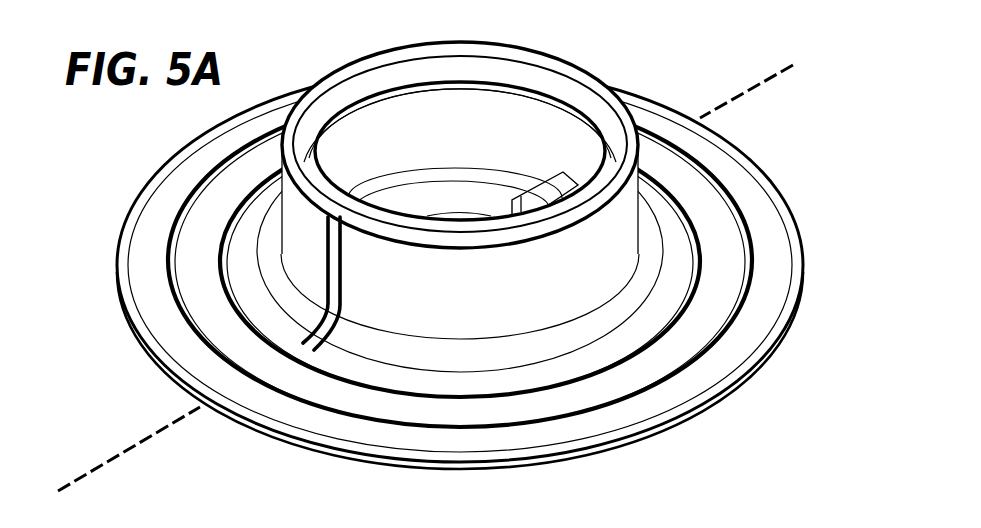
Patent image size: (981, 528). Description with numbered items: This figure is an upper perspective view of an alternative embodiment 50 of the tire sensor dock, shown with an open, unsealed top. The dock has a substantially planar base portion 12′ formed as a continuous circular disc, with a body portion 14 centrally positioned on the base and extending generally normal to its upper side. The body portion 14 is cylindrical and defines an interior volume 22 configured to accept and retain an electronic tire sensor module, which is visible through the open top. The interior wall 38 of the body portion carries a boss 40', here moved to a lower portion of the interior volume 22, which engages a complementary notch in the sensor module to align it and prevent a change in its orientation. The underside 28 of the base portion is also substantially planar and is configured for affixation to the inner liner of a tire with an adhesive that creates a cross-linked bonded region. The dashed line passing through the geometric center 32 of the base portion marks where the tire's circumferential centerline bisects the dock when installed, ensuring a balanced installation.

The alternative embodiment of the tire sensor dock 50 is at (108, 194).
The base portion 12′ is at (192, 168).
The body portion 14 is at (275, 192).
The interior volume 22 is at (502, 110).
The interior wall 38 is at (390, 106).
The boss 40' is at (574, 132).
The underside 28 is at (676, 425).
The geometric center 32 is at (756, 84).